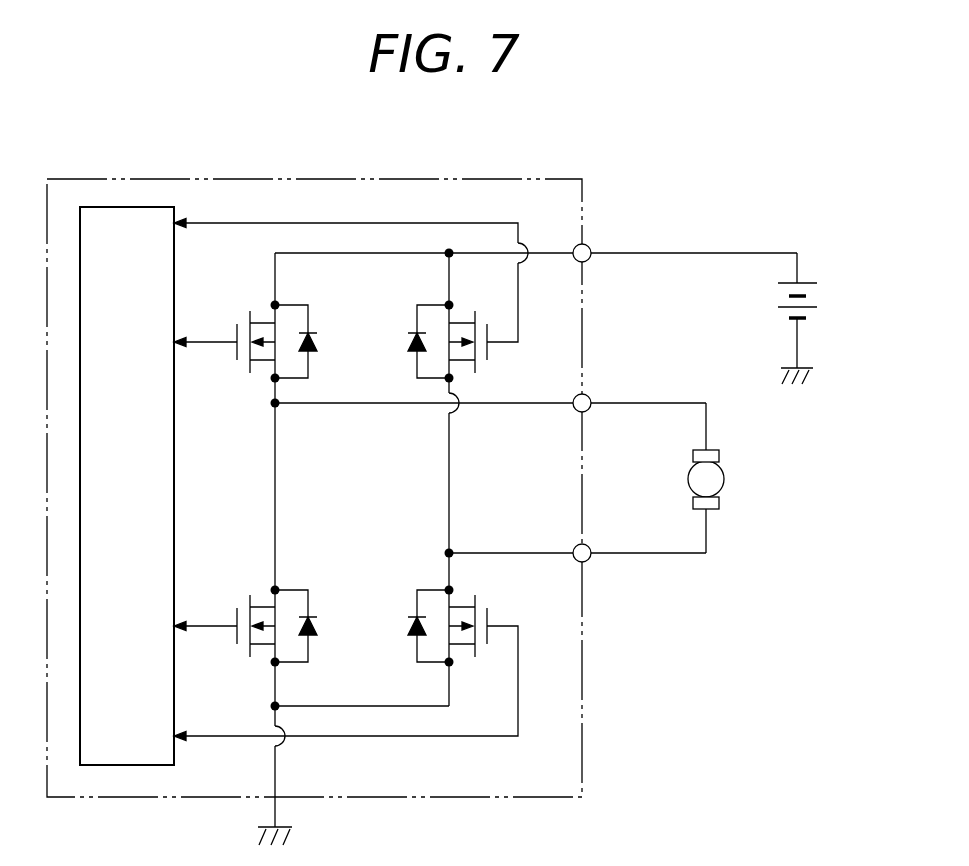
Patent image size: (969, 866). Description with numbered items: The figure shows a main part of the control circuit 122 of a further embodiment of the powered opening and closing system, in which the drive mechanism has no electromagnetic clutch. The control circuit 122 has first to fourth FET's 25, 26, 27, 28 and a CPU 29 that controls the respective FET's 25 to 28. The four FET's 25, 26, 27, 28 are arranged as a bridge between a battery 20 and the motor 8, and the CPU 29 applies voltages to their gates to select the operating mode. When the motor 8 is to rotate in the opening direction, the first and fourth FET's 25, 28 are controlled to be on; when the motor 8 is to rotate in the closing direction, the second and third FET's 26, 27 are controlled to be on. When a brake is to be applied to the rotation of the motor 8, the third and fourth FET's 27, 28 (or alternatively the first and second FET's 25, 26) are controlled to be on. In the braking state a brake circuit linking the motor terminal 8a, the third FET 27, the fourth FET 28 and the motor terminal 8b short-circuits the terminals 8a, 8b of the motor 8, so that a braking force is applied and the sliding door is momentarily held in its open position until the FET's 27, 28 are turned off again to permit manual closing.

The control circuit 122 is at (262, 178).
The CPU 29 is at (120, 207).
The first FET 25 is at (262, 310).
The second FET 26 is at (483, 368).
The third FET 27 is at (262, 597).
The fourth FET 28 is at (485, 600).
The battery 20 is at (817, 296).
The motor 8 is at (734, 481).
The motor terminal 8a is at (718, 450).
The motor terminal 8b is at (718, 509).